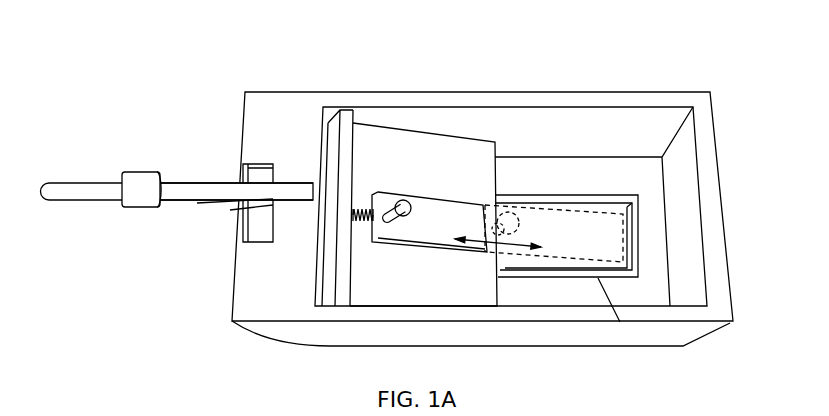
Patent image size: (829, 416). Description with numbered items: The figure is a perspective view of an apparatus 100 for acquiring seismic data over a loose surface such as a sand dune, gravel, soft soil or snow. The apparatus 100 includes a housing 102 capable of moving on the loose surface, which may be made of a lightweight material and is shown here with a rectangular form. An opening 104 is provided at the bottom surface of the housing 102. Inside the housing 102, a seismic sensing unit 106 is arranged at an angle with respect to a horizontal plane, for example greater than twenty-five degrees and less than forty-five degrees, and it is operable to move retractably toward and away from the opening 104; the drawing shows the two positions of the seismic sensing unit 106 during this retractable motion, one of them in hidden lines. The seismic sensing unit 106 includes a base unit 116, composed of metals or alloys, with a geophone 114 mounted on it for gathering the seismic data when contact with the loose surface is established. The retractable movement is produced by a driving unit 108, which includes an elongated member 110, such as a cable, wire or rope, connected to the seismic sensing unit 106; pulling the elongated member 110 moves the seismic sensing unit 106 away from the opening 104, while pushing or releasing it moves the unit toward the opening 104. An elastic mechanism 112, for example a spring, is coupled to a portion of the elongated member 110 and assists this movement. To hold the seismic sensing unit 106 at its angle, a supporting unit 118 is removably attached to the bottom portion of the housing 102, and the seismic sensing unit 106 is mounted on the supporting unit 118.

The apparatus 100 is at (432, 78).
The housing 102 is at (298, 108).
The opening 104 is at (603, 208).
The seismic sensing unit 106 is at (420, 192).
The driving unit 108 is at (227, 183).
The elongated member 110 is at (228, 203).
The elastic mechanism 112 is at (356, 210).
The geophone 114 is at (387, 218).
The base unit 116 is at (578, 242).
The supporting unit 118 is at (417, 290).